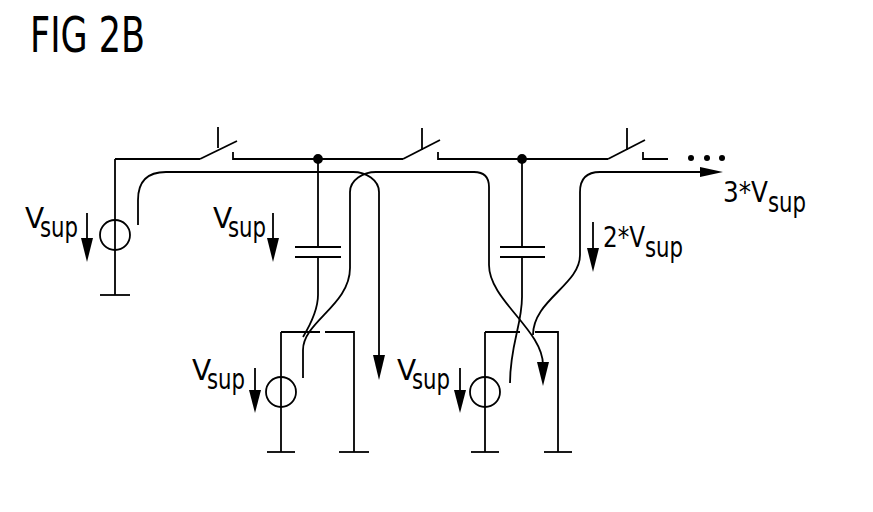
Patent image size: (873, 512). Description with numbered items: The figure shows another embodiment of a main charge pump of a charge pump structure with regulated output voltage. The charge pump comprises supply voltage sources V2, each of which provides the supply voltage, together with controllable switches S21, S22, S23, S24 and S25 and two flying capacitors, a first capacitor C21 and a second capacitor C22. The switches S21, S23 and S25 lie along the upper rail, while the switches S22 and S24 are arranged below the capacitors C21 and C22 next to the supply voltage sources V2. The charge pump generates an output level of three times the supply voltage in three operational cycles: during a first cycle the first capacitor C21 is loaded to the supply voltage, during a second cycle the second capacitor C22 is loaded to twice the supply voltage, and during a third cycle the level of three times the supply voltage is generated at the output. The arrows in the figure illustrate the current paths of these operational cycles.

The controllable switch S21 is at (205, 151).
The controllable switch S22 is at (313, 313).
The controllable switch S23 is at (410, 151).
The controllable switch S24 is at (537, 321).
The controllable switch S25 is at (615, 151).
The first capacitor C21 is at (299, 245).
The second capacitor C22 is at (532, 245).
The supply voltage source V2 is at (106, 222).